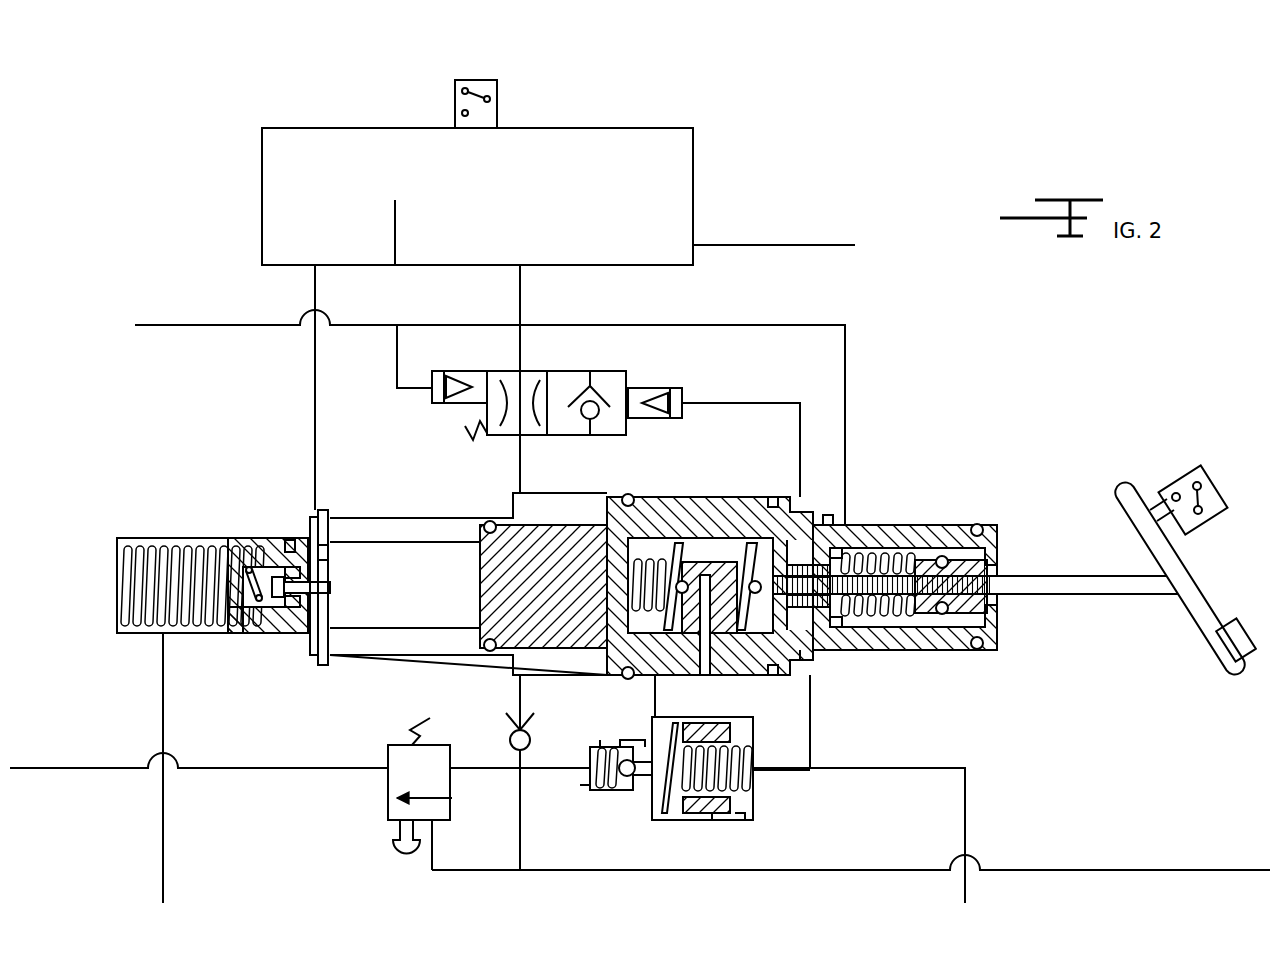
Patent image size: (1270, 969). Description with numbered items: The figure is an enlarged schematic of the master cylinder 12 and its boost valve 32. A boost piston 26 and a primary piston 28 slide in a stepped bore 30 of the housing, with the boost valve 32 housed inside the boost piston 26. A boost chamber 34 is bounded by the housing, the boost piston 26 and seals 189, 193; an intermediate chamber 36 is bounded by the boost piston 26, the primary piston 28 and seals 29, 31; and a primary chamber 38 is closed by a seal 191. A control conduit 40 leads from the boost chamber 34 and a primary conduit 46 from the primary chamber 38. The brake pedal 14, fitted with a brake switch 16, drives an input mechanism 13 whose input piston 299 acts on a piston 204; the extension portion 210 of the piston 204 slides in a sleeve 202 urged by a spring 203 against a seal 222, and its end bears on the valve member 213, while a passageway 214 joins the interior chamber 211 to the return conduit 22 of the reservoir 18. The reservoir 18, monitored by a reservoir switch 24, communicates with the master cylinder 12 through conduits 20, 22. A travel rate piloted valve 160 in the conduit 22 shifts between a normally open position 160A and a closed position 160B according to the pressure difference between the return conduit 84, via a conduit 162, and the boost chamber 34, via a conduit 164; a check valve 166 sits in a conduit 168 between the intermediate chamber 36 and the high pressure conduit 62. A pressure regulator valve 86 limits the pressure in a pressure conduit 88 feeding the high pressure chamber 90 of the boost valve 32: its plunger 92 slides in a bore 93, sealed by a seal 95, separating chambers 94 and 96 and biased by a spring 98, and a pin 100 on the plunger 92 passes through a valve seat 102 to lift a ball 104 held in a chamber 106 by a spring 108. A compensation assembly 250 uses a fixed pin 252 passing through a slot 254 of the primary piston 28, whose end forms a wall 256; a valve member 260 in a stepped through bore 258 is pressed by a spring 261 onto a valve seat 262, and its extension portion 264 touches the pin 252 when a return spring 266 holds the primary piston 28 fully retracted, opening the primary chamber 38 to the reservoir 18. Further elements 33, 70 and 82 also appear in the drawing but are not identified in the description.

The master cylinder 12 is at (761, 557).
The input mechanism 13 is at (937, 530).
The brake pedal 14 is at (1192, 660).
The brake switch 16 is at (1180, 482).
The brake fluid reservoir 18 is at (672, 128).
The conduit 20 is at (315, 405).
The conduit 22 is at (522, 302).
The reservoir switch 24 is at (488, 80).
The boost piston 26 is at (908, 543).
The primary piston 28 is at (549, 535).
The seal 29 is at (495, 522).
The stepped bore 30 is at (478, 568).
The seal 31 is at (629, 494).
The boost valve 32 is at (689, 522).
The plate 33 is at (292, 632).
The boost chamber 34 is at (812, 680).
The intermediate chamber 36 is at (576, 505).
The primary chamber 38 is at (117, 614).
The control conduit 40 is at (802, 737).
The primary conduit 46 is at (165, 725).
The high pressure conduit 62 is at (1070, 870).
The signal line 70 is at (750, 245).
The relief valve 82 is at (385, 823).
The return conduit 84 is at (180, 325).
The pressure regulator valve 86 is at (703, 777).
The pressure conduit 88 is at (655, 680).
The high pressure chamber 90 is at (706, 676).
The plunger 92 is at (710, 818).
The bore 93 is at (744, 822).
The chamber 94 is at (650, 815).
The seal 95 is at (695, 722).
The chamber 96 is at (745, 733).
The spring 98 is at (752, 800).
The pin 100 is at (588, 783).
The valve seat 102 is at (656, 755).
The ball 104 is at (598, 748).
The chamber 106 is at (592, 790).
The spring 108 is at (592, 755).
The travel rate piloted valve 160 is at (563, 388).
The normally open position 160A is at (500, 371).
The closed position 160B is at (555, 371).
The conduit 162 is at (396, 352).
The conduit 164 is at (712, 403).
The check valve 166 is at (510, 725).
The conduit 168 is at (518, 825).
The seal 189 is at (838, 540).
The seal 191 is at (286, 538).
The seal 193 is at (776, 572).
The sleeve 202 is at (850, 600).
The spring 203 is at (882, 572).
The piston 204 is at (990, 625).
The extension portion 210 is at (835, 516).
The interior chamber 211 is at (806, 688).
The valve member 213 is at (810, 535).
The passageway 214 is at (885, 590).
The seal 222 is at (862, 555).
The compensation assembly 250 is at (231, 573).
The pin 252 is at (323, 553).
The slot 254 is at (444, 593).
The wall 256 is at (292, 595).
The stepped through bore 258 is at (240, 590).
The valve member 260 is at (274, 568).
The spring 261 is at (255, 628).
The valve seat 262 is at (310, 615).
The extension portion 264 is at (330, 587).
The return spring 266 is at (150, 543).
The input piston 299 is at (1000, 572).